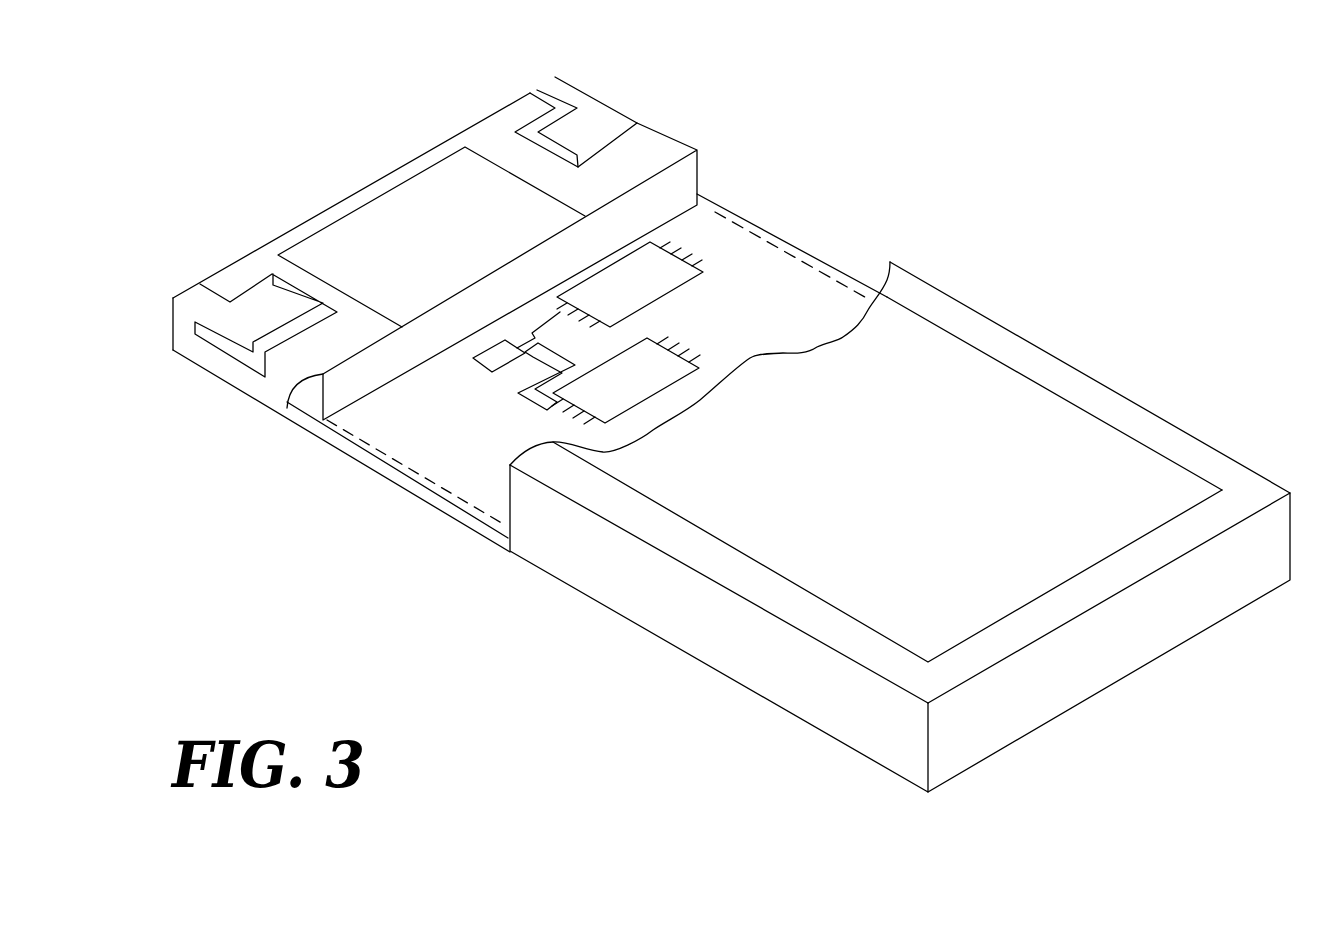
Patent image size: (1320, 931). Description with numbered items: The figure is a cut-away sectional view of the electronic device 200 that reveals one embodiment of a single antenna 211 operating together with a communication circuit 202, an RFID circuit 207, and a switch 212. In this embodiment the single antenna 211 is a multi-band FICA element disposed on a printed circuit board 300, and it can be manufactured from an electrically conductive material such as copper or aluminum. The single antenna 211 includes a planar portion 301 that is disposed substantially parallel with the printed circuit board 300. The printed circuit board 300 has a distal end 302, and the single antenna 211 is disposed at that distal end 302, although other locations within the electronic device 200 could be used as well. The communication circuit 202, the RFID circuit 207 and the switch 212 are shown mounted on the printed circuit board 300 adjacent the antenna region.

The electronic device 200 is at (1063, 362).
The communication circuit 202 is at (700, 262).
The RFID circuit 207 is at (632, 382).
The single antenna 211 is at (447, 138).
The switch 212 is at (505, 362).
The printed circuit board 300 is at (487, 472).
The planar portion 301 is at (645, 177).
The distal end 302 is at (150, 343).